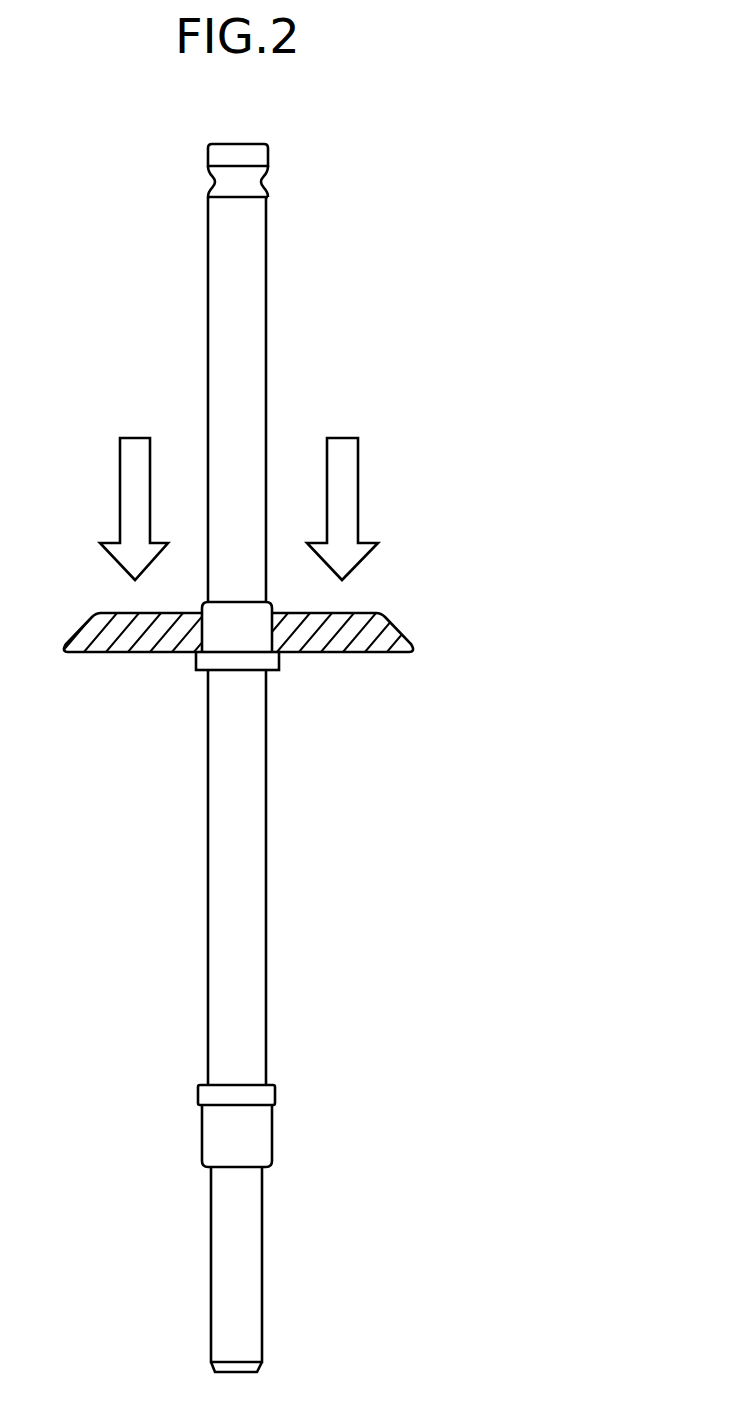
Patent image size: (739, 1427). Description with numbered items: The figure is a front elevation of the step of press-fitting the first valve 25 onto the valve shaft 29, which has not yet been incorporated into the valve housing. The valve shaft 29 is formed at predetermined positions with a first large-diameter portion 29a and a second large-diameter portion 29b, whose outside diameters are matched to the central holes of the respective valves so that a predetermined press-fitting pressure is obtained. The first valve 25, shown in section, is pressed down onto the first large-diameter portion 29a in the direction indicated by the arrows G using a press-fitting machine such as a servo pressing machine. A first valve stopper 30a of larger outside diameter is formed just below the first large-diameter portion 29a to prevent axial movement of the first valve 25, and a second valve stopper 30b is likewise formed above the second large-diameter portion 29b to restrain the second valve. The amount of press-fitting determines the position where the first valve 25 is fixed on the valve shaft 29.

The first valve 25 is at (363, 617).
The valve shaft 29 is at (253, 923).
The first large-diameter portion 29a is at (222, 623).
The second large-diameter portion 29b is at (272, 1132).
The first valve stopper 30a is at (280, 662).
The second valve stopper 30b is at (198, 1095).
The gravity direction arrows G is at (120, 480).